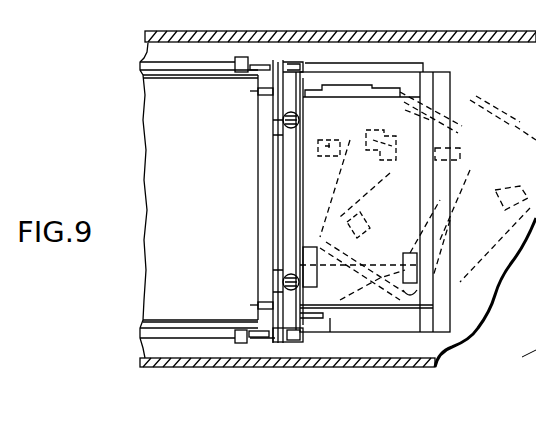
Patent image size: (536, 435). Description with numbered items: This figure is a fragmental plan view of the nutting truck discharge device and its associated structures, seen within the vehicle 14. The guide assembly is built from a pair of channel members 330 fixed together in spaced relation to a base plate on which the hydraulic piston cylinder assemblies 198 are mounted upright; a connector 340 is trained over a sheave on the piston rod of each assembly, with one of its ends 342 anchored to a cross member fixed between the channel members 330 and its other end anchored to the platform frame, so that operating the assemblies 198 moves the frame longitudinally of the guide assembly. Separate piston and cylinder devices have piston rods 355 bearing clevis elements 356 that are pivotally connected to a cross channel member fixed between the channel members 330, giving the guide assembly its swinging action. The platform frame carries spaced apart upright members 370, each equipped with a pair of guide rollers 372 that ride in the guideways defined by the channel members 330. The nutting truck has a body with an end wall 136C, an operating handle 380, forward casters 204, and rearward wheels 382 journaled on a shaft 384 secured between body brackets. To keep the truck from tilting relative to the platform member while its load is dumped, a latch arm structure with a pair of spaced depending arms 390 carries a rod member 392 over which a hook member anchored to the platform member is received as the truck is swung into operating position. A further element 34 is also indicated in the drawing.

The vehicle 14 is at (193, 370).
The housing 34 is at (525, 419).
The end wall 136C is at (337, 97).
The hydraulic piston cylinder assembly 198 is at (283, 121).
The forward caster 204 is at (312, 150).
The channel member 330 is at (290, 60).
The connector 340 is at (485, 292).
The end of connector 342 is at (522, 357).
The piston rod 355 is at (258, 92).
The clevis element 356 is at (278, 130).
The upright member 370 is at (303, 75).
The guide roller 372 is at (295, 342).
The operating handle 380 is at (375, 290).
The rearward end wheel 382 is at (312, 262).
The shaft 384 is at (400, 180).
The depending arm 390 is at (410, 96).
The rod member 392 is at (400, 170).